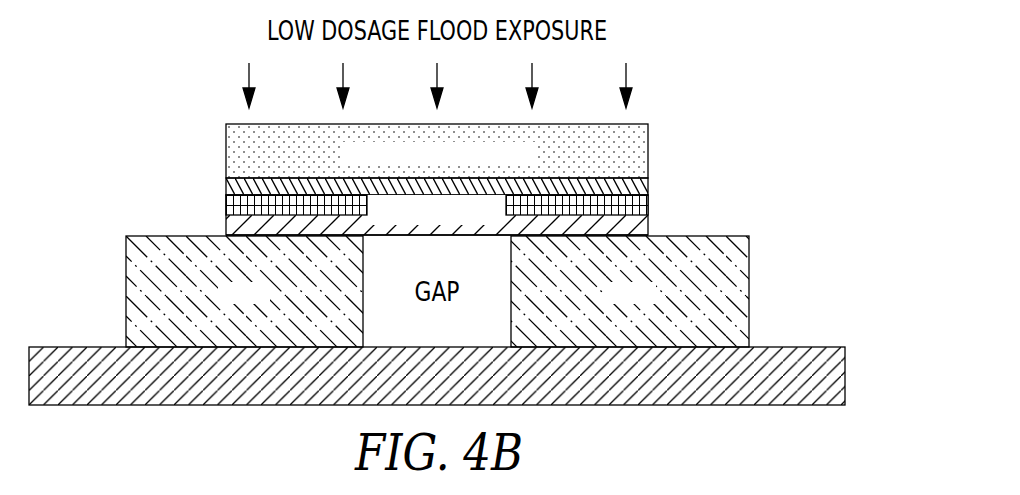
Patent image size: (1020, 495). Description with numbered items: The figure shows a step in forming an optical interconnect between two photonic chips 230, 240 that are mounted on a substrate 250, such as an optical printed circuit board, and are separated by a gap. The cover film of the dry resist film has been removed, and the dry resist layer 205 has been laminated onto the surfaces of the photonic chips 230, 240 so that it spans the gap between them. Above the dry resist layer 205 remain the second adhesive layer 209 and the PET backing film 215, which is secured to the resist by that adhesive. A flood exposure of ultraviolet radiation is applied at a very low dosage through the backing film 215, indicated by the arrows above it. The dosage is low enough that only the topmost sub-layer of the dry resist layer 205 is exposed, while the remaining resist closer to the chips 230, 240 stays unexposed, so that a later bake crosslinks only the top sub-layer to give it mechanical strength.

The backing film 215 is at (238, 137).
The second adhesive layer 209 is at (240, 188).
The dry resist layer 205 is at (666, 210).
The photonic chip 230 is at (128, 292).
The photonic chip 240 is at (738, 297).
The substrate 250 is at (835, 382).